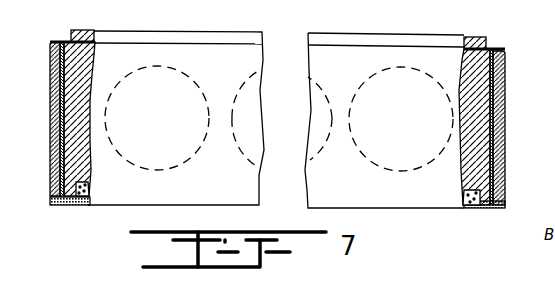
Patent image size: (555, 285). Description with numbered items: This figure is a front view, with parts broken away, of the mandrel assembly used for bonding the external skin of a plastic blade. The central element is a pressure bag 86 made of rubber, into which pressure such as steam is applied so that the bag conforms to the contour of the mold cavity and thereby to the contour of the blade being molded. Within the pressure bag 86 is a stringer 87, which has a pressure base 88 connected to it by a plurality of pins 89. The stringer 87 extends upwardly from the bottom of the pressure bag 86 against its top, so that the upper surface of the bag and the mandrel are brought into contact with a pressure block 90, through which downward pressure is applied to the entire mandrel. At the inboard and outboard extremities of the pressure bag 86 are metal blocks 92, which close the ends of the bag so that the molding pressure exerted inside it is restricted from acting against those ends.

The pressure bag 86 is at (422, 180).
The stringer 87 is at (480, 75).
The pressure base 88 is at (478, 207).
The pins 89 is at (78, 203).
The pressure block 90 is at (483, 37).
The metal blocks 92 is at (57, 167).